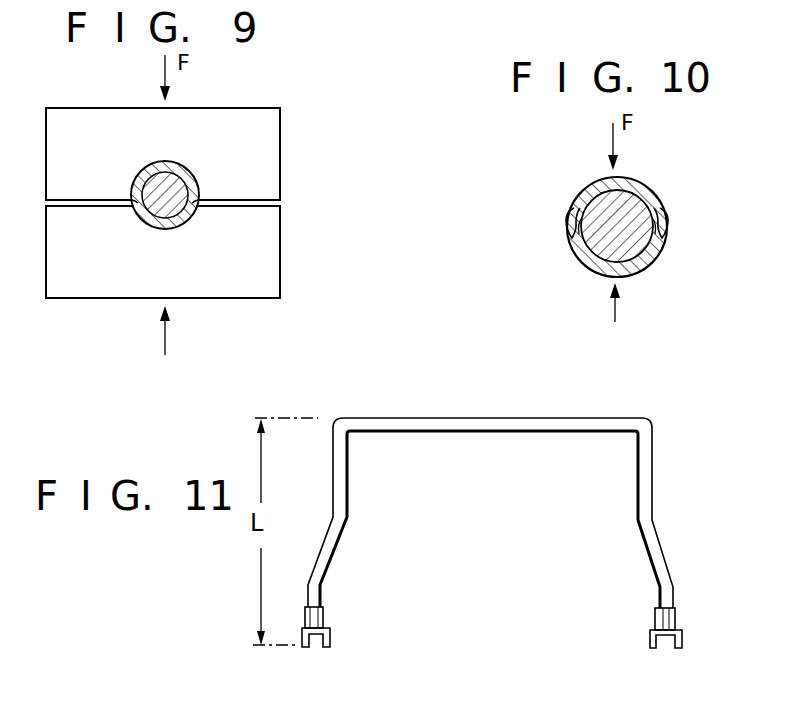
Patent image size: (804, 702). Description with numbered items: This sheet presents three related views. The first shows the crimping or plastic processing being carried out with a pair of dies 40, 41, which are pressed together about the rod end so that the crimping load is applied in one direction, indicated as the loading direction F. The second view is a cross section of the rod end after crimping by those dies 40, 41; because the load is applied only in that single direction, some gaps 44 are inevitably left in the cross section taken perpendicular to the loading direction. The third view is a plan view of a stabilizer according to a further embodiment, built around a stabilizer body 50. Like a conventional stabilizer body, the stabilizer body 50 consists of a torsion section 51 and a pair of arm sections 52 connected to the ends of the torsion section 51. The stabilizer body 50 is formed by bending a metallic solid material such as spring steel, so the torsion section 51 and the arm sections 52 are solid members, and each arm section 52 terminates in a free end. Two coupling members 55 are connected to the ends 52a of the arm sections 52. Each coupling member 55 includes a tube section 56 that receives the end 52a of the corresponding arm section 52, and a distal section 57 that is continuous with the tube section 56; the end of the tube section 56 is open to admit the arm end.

In FIG. 9, the die 40 is at (280, 160).
In FIG. 9, the die 41 is at (275, 272).
In FIG. 10, the gaps 44 is at (578, 217).
In FIG. 11, the stabilizer body 50 is at (481, 526).
In FIG. 11, the torsion section 51 is at (535, 420).
In FIG. 11, the arm sections 52 is at (337, 543).
In FIG. 11, the ends of the arm sections 52a is at (324, 615).
In FIG. 11, the coupling members 55 is at (331, 634).
In FIG. 11, the tube section 56 is at (308, 618).
In FIG. 11, the distal section 57 is at (316, 648).